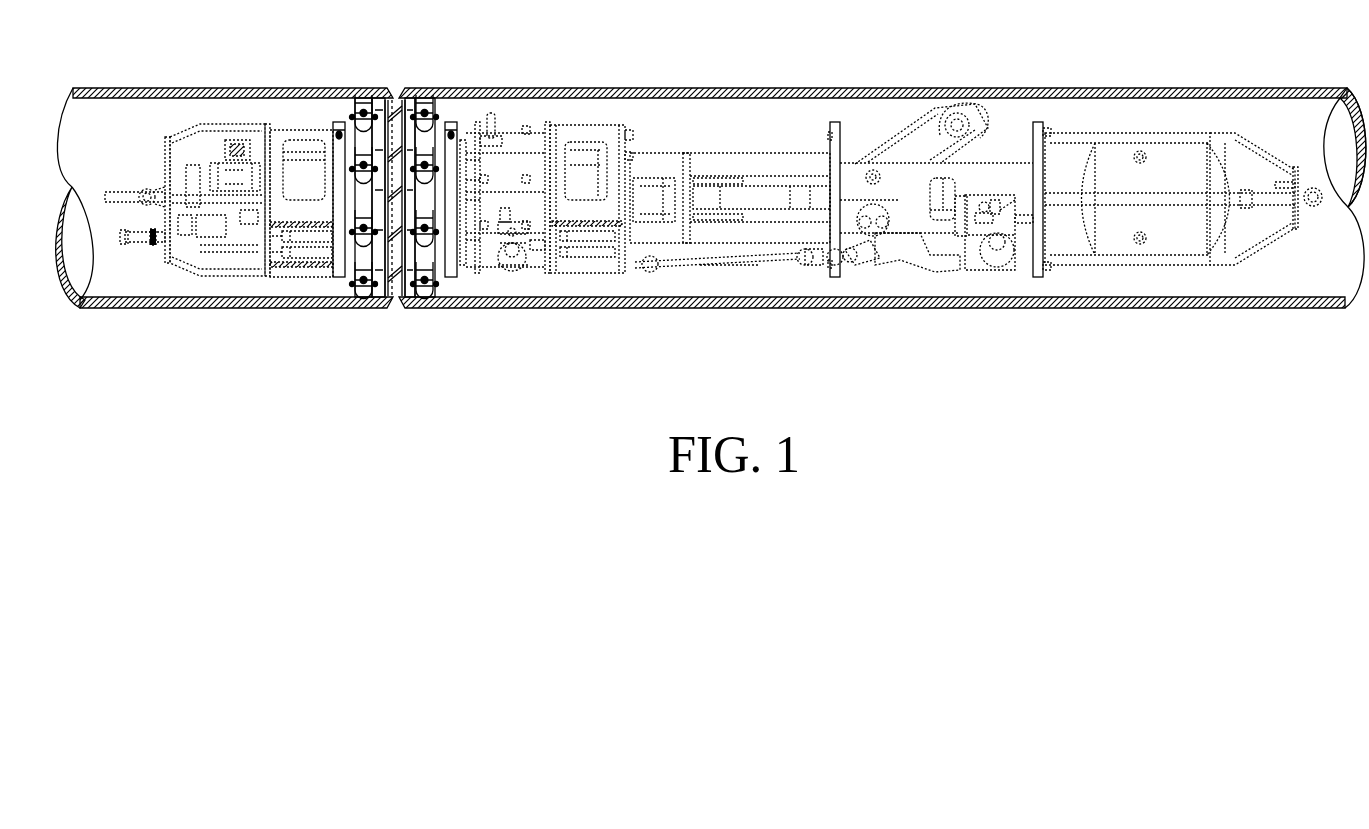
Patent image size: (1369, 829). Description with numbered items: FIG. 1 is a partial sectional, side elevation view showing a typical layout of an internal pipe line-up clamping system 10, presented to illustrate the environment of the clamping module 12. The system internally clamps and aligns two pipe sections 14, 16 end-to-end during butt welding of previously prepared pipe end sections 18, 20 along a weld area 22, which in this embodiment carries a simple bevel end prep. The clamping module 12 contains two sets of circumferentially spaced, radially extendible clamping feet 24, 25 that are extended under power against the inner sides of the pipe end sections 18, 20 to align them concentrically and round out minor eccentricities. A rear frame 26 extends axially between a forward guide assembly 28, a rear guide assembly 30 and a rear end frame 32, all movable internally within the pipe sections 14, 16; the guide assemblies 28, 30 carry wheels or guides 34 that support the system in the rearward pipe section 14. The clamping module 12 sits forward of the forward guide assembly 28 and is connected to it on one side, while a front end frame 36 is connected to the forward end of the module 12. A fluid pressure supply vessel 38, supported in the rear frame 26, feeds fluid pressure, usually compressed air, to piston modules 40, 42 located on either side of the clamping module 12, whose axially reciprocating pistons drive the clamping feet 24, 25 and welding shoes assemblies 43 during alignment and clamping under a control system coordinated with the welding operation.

The internal pipe line-up clamping system 10 is at (722, 142).
The clamping module 12 is at (440, 108).
The pipe section 14 is at (790, 88).
The pipe section 16 is at (290, 88).
The pipe end section 18 is at (400, 93).
The pipe end section 20 is at (393, 93).
The weld area 22 is at (397, 308).
The clamping feet 24 is at (430, 300).
The clamping feet 25 is at (356, 298).
The rear frame 26 is at (805, 152).
The forward guide assembly 28 is at (578, 120).
The rear guide assembly 30 is at (902, 124).
The rear end frame 32 is at (1140, 140).
The wheels or guides 34 is at (508, 278).
The front end frame 36 is at (223, 122).
The fluid pressure supply vessel 38 is at (1160, 240).
The piston module 40 is at (587, 273).
The piston module 42 is at (290, 272).
The welding shoes assemblies 43 is at (392, 298).